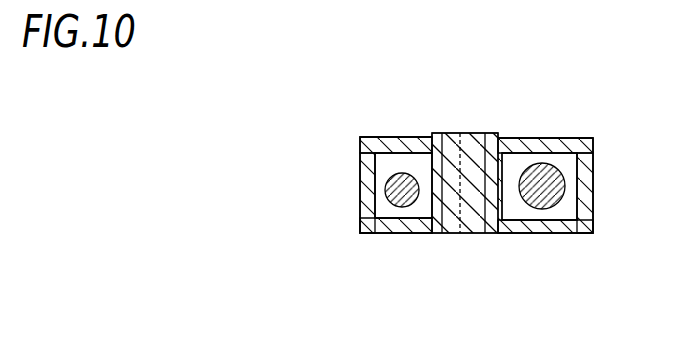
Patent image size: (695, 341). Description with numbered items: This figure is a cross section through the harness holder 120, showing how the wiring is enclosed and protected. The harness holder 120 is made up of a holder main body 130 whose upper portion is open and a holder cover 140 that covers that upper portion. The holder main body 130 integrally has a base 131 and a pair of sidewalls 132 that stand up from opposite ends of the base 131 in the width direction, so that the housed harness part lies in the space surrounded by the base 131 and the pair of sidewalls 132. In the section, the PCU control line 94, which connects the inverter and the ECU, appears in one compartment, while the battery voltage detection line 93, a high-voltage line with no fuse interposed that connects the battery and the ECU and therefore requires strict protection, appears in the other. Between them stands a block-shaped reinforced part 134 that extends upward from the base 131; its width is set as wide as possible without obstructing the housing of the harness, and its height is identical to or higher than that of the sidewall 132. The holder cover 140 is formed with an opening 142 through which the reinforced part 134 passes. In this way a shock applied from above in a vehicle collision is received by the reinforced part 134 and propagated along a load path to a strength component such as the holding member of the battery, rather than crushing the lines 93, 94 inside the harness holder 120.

The harness holder 120 is at (554, 137).
The holder main body 130 is at (398, 289).
The base 131 is at (391, 234).
The sidewall 132 is at (358, 209).
The reinforced part 134 is at (462, 132).
The holder cover 140 is at (518, 138).
The opening 142 is at (440, 132).
The battery voltage detection line 93 is at (562, 168).
The PCU control line 94 is at (395, 175).